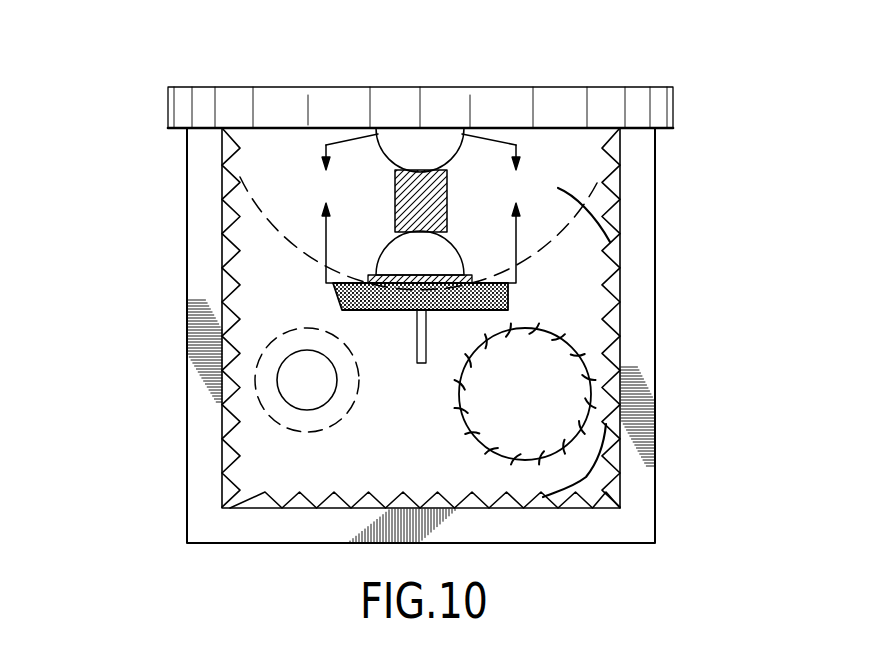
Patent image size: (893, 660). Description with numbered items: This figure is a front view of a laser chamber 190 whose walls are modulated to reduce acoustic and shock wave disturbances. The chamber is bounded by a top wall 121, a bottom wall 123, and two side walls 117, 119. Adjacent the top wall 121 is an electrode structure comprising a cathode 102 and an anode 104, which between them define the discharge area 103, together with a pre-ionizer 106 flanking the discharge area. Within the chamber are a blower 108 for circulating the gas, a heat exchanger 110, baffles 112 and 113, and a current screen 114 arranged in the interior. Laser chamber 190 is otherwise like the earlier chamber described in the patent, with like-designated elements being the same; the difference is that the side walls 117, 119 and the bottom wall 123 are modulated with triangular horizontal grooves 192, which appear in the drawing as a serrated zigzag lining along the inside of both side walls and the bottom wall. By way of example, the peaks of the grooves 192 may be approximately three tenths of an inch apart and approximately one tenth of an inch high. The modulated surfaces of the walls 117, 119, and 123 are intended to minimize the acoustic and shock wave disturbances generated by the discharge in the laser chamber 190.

The cathode 102 is at (401, 158).
The discharge area 103 is at (432, 200).
The anode 104 is at (401, 265).
The pre-ionizer 106 is at (348, 142).
The blower 108 is at (506, 405).
The heat exchanger 110 is at (288, 390).
The baffle 112 is at (596, 462).
The baffle 113 is at (585, 207).
The current screen 114 is at (274, 223).
The side wall 117 is at (205, 350).
The side wall 119 is at (635, 367).
The top wall 121 is at (562, 102).
The bottom wall 123 is at (346, 522).
The laser chamber 190 is at (707, 95).
The triangular horizontal grooves 192 is at (603, 312).